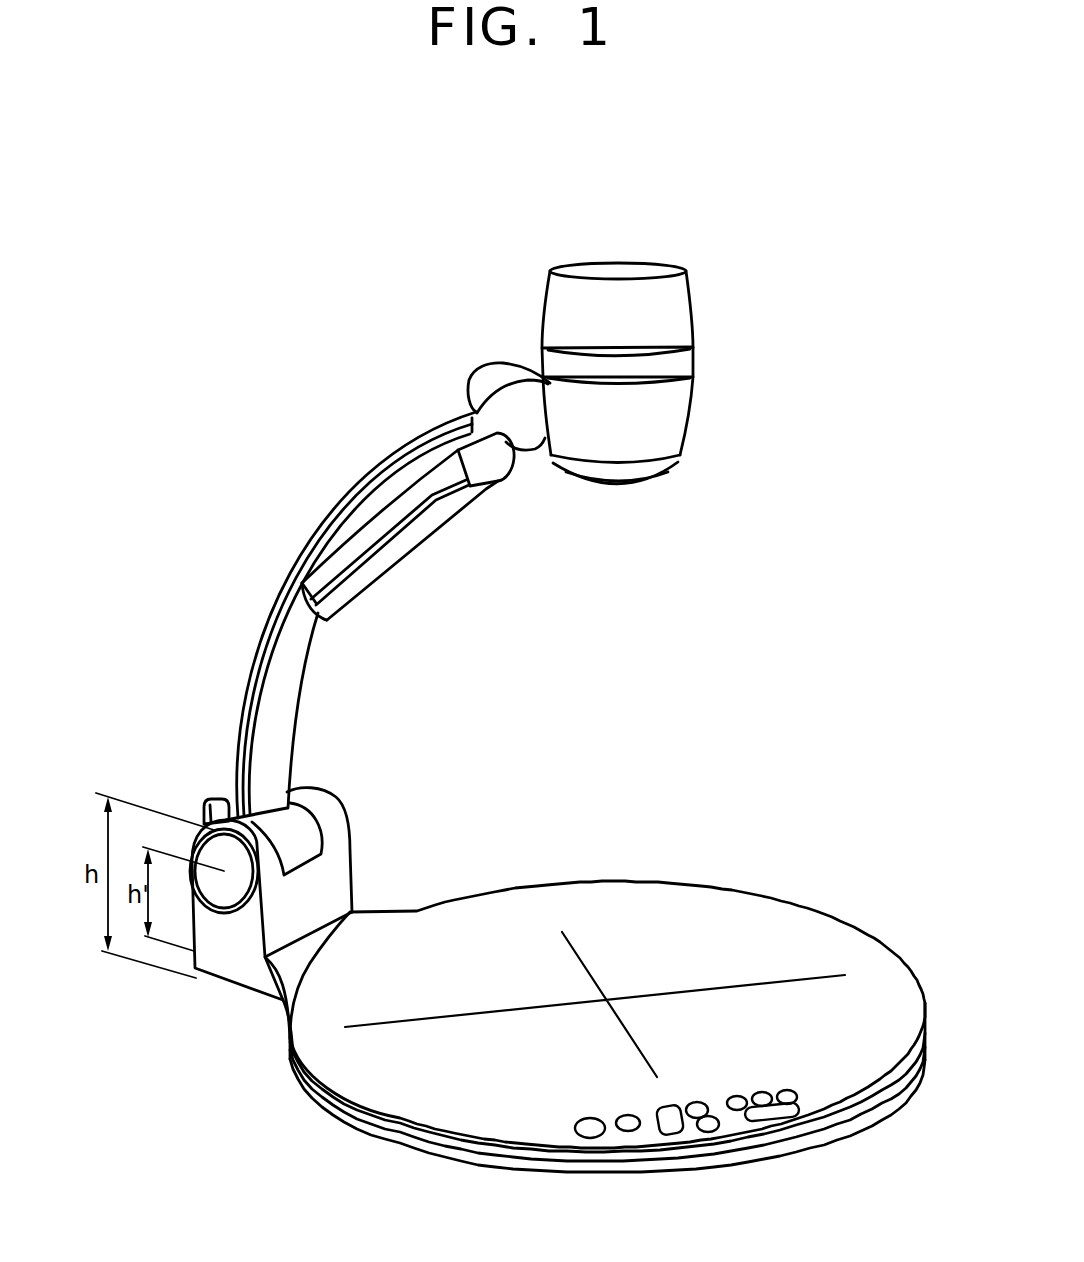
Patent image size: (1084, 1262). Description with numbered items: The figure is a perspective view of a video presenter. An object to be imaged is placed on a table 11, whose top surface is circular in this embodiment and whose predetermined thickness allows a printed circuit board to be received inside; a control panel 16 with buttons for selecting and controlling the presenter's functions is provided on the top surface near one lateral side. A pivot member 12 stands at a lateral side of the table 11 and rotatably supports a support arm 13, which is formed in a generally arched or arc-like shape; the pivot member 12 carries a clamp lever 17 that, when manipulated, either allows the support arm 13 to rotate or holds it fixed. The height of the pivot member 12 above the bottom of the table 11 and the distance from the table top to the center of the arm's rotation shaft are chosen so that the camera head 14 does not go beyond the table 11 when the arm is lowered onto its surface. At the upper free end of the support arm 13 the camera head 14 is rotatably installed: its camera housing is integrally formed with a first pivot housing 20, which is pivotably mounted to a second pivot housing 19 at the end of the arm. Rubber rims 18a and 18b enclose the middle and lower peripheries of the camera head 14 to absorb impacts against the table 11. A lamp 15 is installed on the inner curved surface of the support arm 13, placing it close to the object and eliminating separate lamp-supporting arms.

The table 11 is at (892, 990).
The pivot member 12 is at (238, 943).
The support arm 13 is at (252, 660).
The camera head 14 is at (662, 312).
The lamp 15 is at (422, 580).
The control panel 16 is at (582, 1112).
The clamp lever 17 is at (219, 804).
The rubber rim 18a is at (680, 365).
The rubber rim 18b is at (670, 463).
The second pivot housing 19 is at (485, 377).
The first pivot housing 20 is at (528, 424).